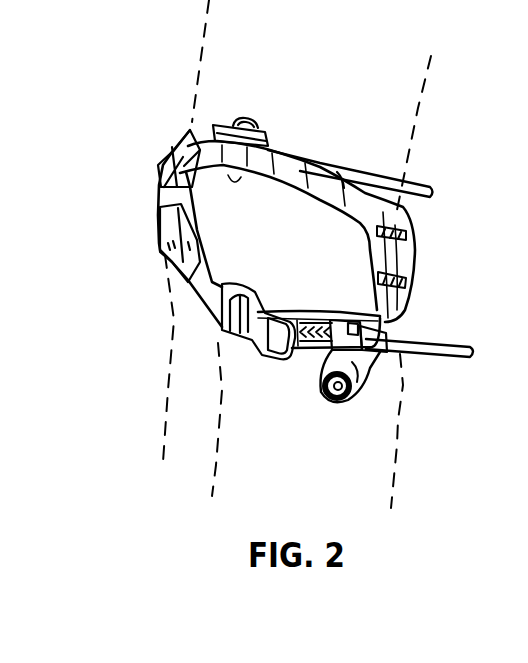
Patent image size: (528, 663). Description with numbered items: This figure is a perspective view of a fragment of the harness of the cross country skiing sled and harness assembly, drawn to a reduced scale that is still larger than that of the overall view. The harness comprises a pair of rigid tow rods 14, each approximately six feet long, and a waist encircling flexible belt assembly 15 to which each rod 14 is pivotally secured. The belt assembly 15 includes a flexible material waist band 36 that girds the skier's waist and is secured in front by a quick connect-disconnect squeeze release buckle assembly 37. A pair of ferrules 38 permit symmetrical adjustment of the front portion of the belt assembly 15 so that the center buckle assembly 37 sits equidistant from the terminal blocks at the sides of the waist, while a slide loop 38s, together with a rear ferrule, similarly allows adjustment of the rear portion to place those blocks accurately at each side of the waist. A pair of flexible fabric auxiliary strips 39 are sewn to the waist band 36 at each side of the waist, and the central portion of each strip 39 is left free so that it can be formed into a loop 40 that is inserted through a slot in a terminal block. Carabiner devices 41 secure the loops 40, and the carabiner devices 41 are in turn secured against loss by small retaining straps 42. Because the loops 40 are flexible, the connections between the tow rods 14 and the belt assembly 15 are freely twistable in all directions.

The rigid tow rods 14 is at (380, 174).
The waist encircling flexible belt assembly 15 is at (300, 173).
The flexible material waist band 36 is at (340, 172).
The squeeze release buckle assembly 37 is at (174, 264).
The ferrules 38 is at (172, 151).
The slide loop 38s is at (403, 209).
The flexible fabric auxiliary strips 39 is at (308, 322).
The loop 40 is at (327, 401).
The carabiner devices 41 is at (233, 123).
The small retaining straps 42 is at (338, 401).